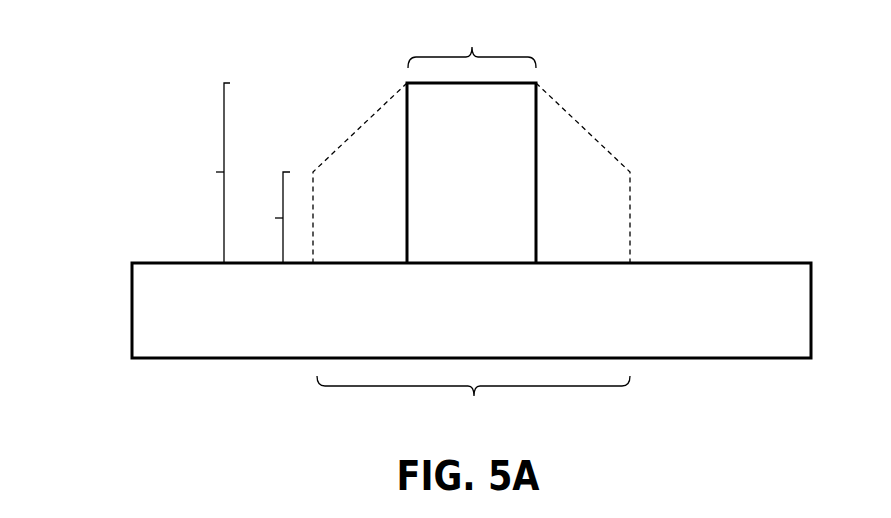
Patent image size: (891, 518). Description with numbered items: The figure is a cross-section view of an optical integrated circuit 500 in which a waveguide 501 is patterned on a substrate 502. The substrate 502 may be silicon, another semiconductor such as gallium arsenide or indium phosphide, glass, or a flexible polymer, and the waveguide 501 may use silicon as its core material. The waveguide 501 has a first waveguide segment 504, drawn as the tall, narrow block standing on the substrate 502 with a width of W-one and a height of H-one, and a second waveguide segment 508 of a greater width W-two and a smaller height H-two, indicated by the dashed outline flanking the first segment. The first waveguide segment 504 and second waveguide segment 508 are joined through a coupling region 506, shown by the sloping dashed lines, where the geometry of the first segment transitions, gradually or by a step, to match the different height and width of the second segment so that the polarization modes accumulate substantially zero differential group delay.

The optical integrated circuit 500 is at (133, 95).
The waveguide 501 is at (398, 148).
The substrate 502 is at (451, 330).
The first waveguide segment 504 is at (452, 188).
The coupling region 506 is at (583, 115).
The second waveguide segment 508 is at (593, 227).